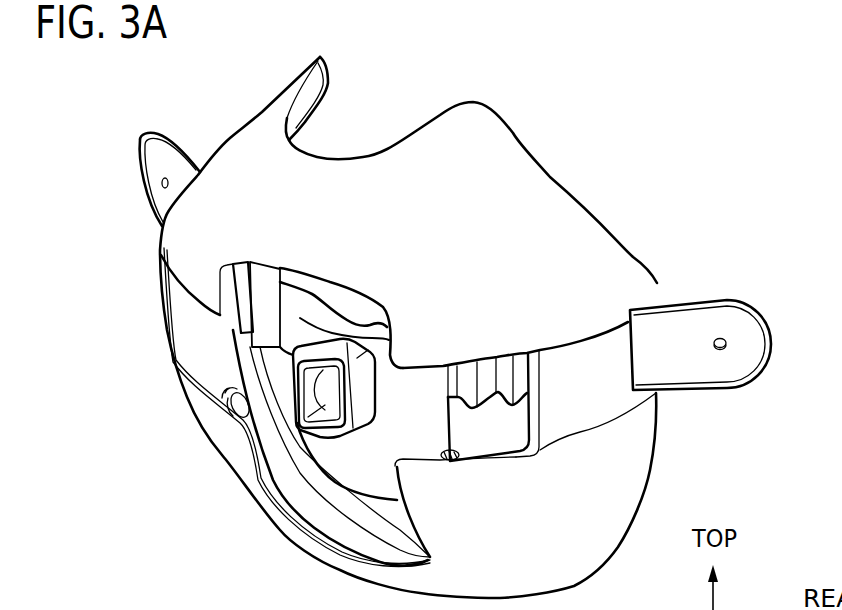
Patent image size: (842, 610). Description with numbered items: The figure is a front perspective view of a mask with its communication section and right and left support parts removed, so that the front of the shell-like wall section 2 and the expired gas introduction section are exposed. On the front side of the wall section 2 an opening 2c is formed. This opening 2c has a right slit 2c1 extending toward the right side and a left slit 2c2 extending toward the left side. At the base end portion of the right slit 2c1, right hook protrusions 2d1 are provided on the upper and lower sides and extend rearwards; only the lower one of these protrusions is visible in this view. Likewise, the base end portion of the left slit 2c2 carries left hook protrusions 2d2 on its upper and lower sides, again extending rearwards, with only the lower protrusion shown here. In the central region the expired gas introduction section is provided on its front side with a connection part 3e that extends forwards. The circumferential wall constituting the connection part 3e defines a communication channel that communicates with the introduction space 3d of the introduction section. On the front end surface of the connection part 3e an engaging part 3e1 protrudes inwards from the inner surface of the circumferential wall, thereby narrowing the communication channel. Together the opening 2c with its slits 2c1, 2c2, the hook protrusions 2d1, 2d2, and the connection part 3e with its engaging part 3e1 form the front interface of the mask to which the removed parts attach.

The wall section 2 is at (527, 192).
The opening 2c is at (272, 523).
The right slit 2c1 is at (170, 368).
The left slit 2c2 is at (489, 352).
The right hook protrusion 2d1 is at (229, 399).
The left hook protrusion 2d2 is at (461, 453).
The introduction space 3d is at (349, 306).
The connection part 3e is at (303, 402).
The engaging part 3e1 is at (308, 417).